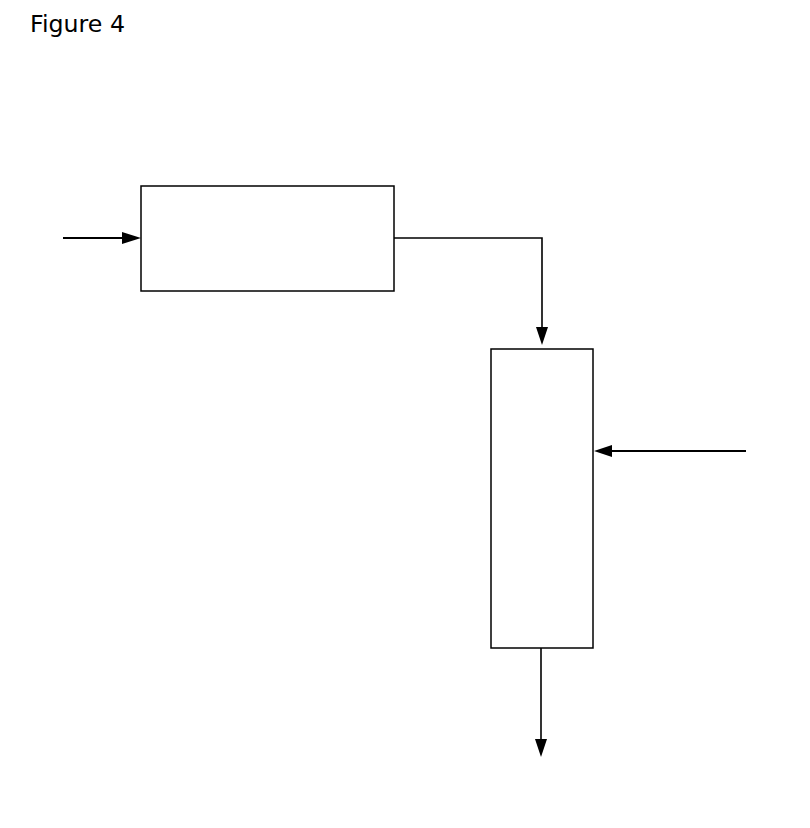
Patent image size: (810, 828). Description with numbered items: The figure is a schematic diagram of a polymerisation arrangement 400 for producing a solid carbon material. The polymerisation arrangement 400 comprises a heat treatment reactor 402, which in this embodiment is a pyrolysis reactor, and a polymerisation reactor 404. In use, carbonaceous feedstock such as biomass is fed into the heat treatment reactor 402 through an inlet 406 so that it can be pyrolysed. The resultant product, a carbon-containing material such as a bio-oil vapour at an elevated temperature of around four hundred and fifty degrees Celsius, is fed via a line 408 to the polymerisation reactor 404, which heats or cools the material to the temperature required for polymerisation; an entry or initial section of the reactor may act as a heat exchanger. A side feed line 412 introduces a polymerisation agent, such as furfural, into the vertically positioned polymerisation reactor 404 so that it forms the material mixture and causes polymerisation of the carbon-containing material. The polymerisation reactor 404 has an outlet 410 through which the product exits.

The polymerisation arrangement 400 is at (61, 148).
The heat treatment reactor 402 is at (282, 185).
The polymerisation reactor 404 is at (491, 569).
The inlet 406 is at (90, 239).
The line 408 is at (523, 237).
The outlet 410 is at (541, 712).
The side feed line 412 is at (695, 451).